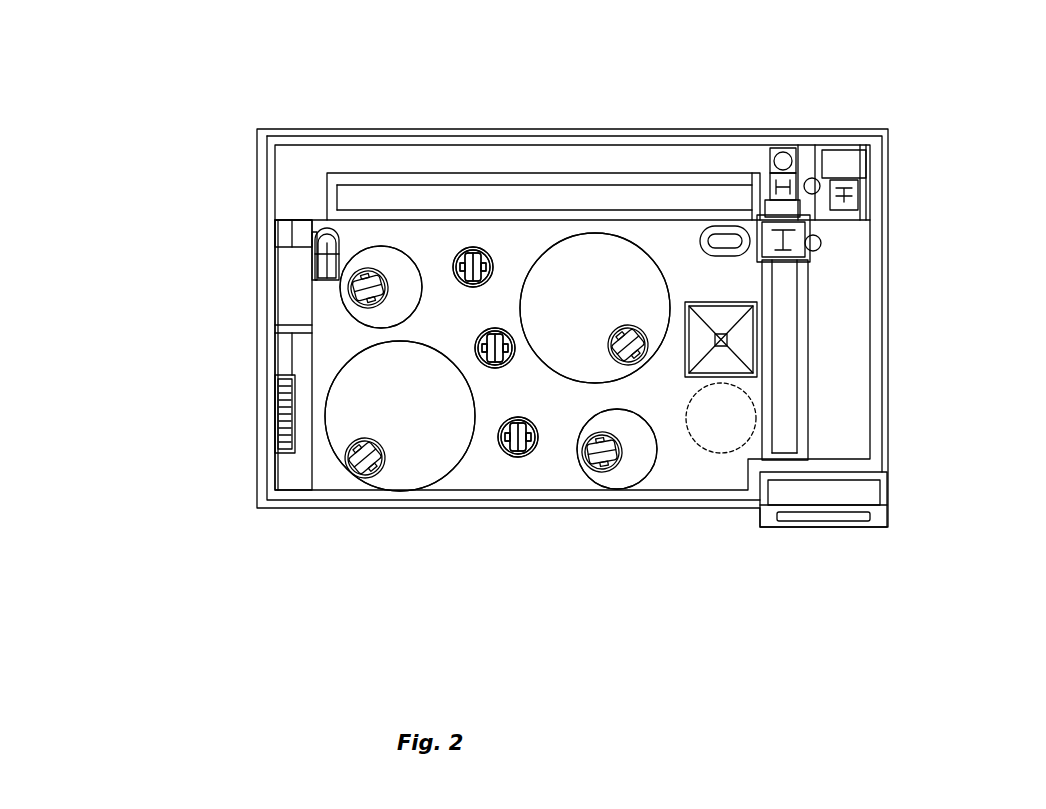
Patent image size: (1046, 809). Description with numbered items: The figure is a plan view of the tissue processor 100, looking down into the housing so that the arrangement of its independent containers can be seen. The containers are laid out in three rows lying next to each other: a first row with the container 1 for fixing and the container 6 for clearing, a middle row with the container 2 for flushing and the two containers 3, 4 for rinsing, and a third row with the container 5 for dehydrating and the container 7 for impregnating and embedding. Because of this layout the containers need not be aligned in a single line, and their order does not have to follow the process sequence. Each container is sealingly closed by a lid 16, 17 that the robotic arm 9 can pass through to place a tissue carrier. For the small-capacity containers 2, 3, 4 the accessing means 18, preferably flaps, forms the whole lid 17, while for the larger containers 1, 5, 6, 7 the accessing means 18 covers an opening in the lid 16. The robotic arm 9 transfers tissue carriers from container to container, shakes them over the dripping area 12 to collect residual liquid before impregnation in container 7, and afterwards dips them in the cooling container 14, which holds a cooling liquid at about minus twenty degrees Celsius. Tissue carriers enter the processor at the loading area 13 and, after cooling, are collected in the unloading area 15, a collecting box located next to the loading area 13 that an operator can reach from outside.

The tissue processor 100 is at (122, 146).
The container for fixing 1 is at (362, 236).
The container for flushing 2 is at (450, 242).
The container for rinsing 3 is at (466, 336).
The container for rinsing 4 is at (497, 460).
The container for dehydrating 5 is at (572, 478).
The container for clearing 6 is at (330, 472).
The container for impregnating and embedding 7 is at (667, 252).
The robotic arm 9 is at (728, 228).
The dripping area 12 is at (733, 340).
The loading area 13 is at (275, 438).
The cooling container 14 is at (723, 455).
The unloading area 15 is at (270, 252).
The lid 16 is at (583, 250).
The lid 17 is at (471, 246).
The accessing means 18 is at (352, 305).